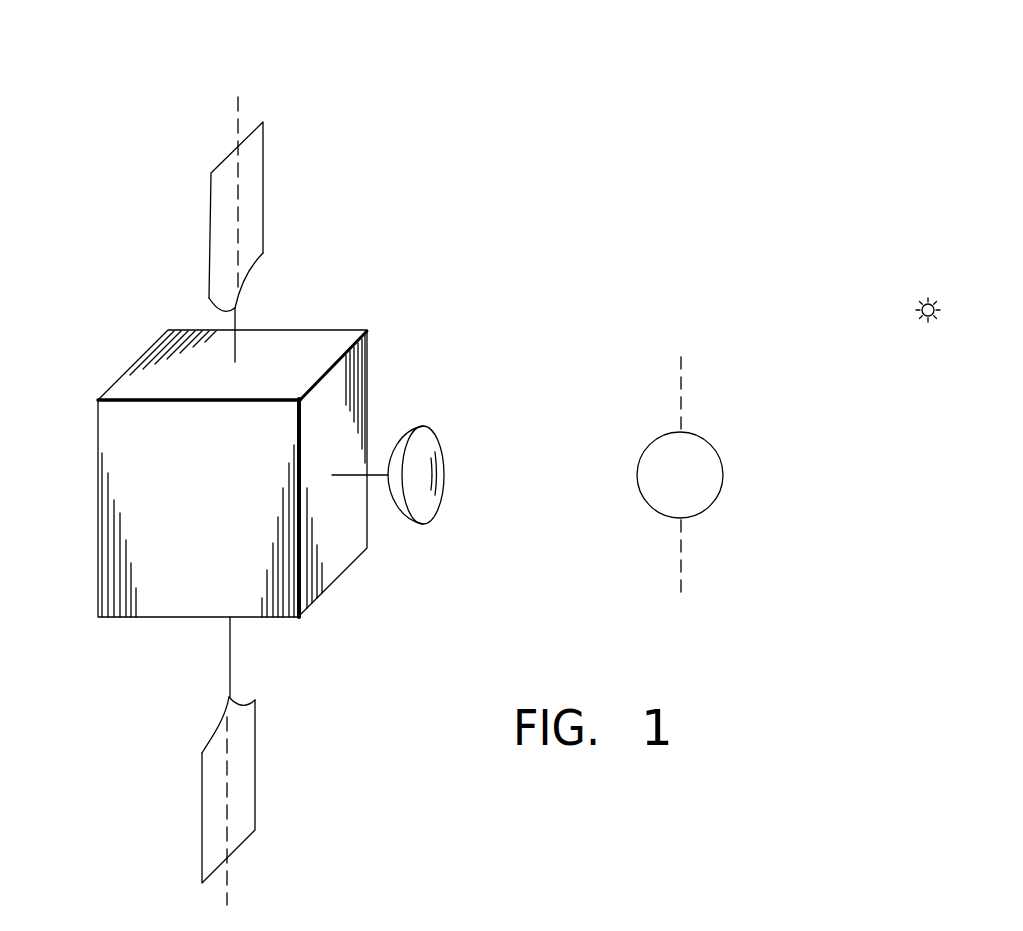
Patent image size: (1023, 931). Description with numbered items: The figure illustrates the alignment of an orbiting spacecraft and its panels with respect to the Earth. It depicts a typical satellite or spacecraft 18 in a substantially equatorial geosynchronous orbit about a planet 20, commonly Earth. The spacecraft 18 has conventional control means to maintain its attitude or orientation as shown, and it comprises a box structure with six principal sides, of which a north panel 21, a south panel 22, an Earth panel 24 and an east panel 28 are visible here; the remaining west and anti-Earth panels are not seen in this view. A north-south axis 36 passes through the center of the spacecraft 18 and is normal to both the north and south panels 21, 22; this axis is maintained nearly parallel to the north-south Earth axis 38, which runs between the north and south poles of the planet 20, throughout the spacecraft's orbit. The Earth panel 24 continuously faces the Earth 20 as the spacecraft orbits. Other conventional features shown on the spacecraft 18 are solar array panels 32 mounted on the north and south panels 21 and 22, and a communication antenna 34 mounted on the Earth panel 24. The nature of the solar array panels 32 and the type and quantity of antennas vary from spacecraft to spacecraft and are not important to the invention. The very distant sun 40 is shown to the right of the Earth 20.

The spacecraft 18 is at (427, 305).
The planet 20 is at (737, 471).
The north panel 21 is at (293, 357).
The south panel 22 is at (266, 632).
The Earth panel 24 is at (343, 440).
The east panel 28 is at (142, 602).
The solar array panels 32 is at (263, 183).
The communication antenna 34 is at (442, 507).
The north-south axis 36 is at (240, 128).
The north-south Earth axis 38 is at (681, 395).
The sun 40 is at (938, 313).